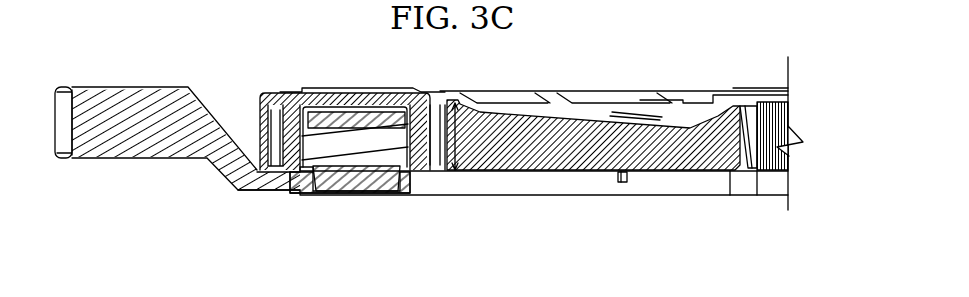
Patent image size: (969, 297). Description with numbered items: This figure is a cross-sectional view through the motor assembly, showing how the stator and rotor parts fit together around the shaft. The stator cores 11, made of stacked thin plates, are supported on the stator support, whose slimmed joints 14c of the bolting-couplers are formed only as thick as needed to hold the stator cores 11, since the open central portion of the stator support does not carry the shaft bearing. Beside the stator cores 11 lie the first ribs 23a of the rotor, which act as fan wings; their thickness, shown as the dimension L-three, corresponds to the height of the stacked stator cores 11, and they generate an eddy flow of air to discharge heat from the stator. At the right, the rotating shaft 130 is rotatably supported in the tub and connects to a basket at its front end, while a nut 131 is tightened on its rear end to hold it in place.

The joint 14c is at (275, 190).
The stator core 11 is at (355, 162).
The first rib 23a is at (543, 172).
The rotating shaft 130 is at (772, 118).
The nut 131 is at (770, 188).